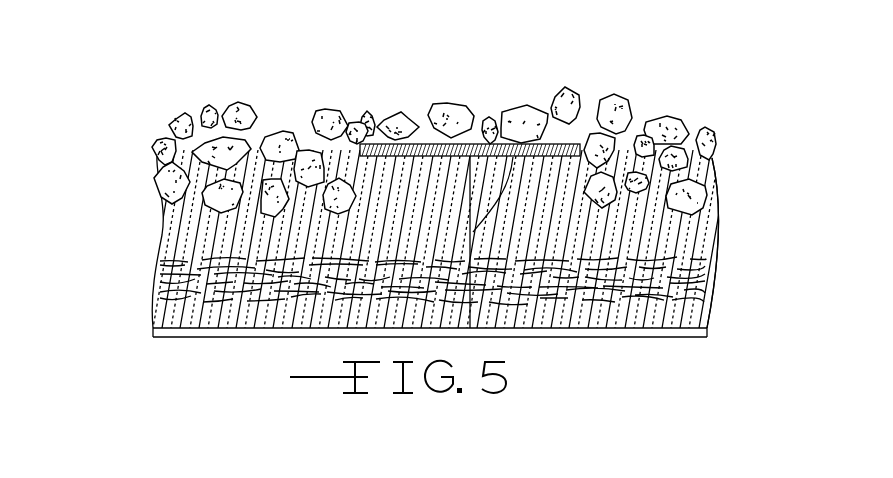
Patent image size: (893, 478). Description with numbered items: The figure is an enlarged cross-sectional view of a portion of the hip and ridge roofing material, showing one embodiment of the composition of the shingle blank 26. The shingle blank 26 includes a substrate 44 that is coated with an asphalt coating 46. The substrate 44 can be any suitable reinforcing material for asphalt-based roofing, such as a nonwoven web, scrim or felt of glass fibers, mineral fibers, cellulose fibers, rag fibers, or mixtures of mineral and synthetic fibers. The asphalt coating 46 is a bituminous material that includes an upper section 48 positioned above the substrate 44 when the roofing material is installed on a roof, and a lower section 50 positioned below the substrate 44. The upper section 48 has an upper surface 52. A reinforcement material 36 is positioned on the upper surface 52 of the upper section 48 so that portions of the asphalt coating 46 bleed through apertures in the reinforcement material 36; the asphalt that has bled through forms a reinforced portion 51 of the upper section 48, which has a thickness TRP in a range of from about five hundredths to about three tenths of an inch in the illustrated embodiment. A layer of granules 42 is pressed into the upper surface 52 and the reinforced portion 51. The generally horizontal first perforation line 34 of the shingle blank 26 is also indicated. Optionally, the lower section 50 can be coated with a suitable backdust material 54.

The shingle blank 26 is at (183, 42).
The first perforation line 34 is at (515, 144).
The reinforcement material 36 is at (407, 125).
The granules 42 is at (185, 114).
The substrate 44 is at (708, 278).
The asphalt coating 46 is at (712, 218).
The upper section 48 is at (134, 150).
The lower section 50 is at (136, 300).
The reinforced portion 51 is at (385, 128).
The upper surface 52 is at (162, 146).
The backdust material 54 is at (568, 337).
The thickness of the reinforced portion TRP is at (726, 115).